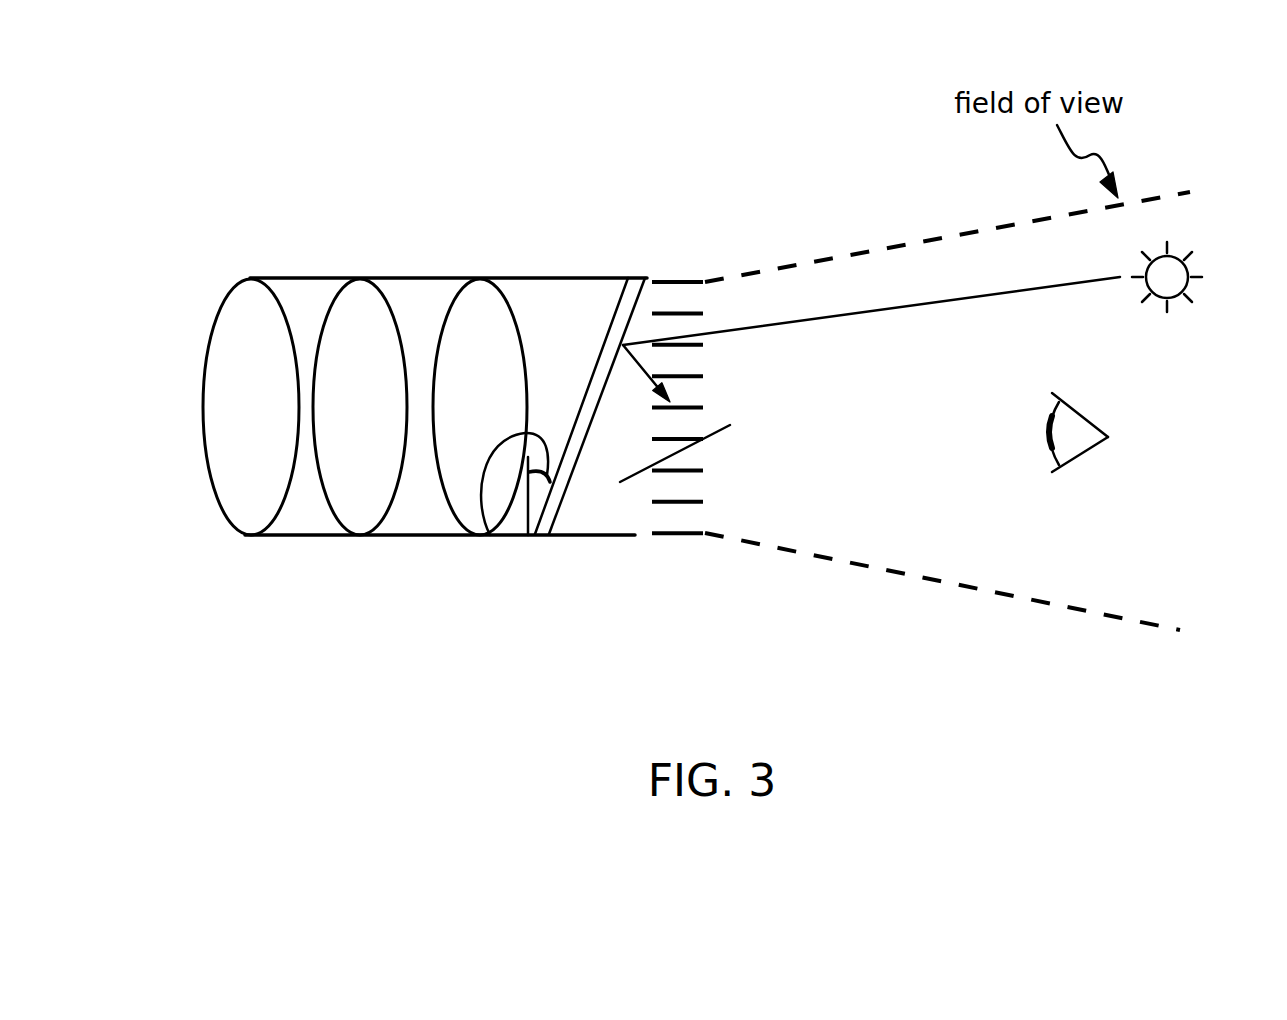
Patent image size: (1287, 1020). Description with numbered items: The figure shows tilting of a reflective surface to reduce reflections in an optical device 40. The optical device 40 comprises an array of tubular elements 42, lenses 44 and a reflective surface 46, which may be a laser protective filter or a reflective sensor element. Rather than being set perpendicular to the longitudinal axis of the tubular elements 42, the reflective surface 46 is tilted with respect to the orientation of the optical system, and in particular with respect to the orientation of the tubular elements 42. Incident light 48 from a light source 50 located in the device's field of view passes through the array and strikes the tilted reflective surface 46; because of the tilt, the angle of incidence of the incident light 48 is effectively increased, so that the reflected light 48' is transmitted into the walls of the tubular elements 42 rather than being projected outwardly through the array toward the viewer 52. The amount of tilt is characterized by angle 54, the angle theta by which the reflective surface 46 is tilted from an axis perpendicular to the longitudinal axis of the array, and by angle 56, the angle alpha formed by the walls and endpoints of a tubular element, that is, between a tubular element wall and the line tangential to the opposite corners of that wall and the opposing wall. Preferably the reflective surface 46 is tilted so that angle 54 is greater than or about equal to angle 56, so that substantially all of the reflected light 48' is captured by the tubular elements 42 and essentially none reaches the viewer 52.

The optical device 40 is at (385, 546).
The array of tubular elements 42 is at (657, 307).
The lenses 44 is at (257, 300).
The reflective surface 46 is at (616, 310).
The incident light 48 is at (871, 296).
The reflected light 48' is at (725, 386).
The light source 50 is at (1147, 298).
The viewer 52 is at (1077, 453).
The angle theta 54 is at (488, 535).
The angle alpha 56 is at (653, 450).